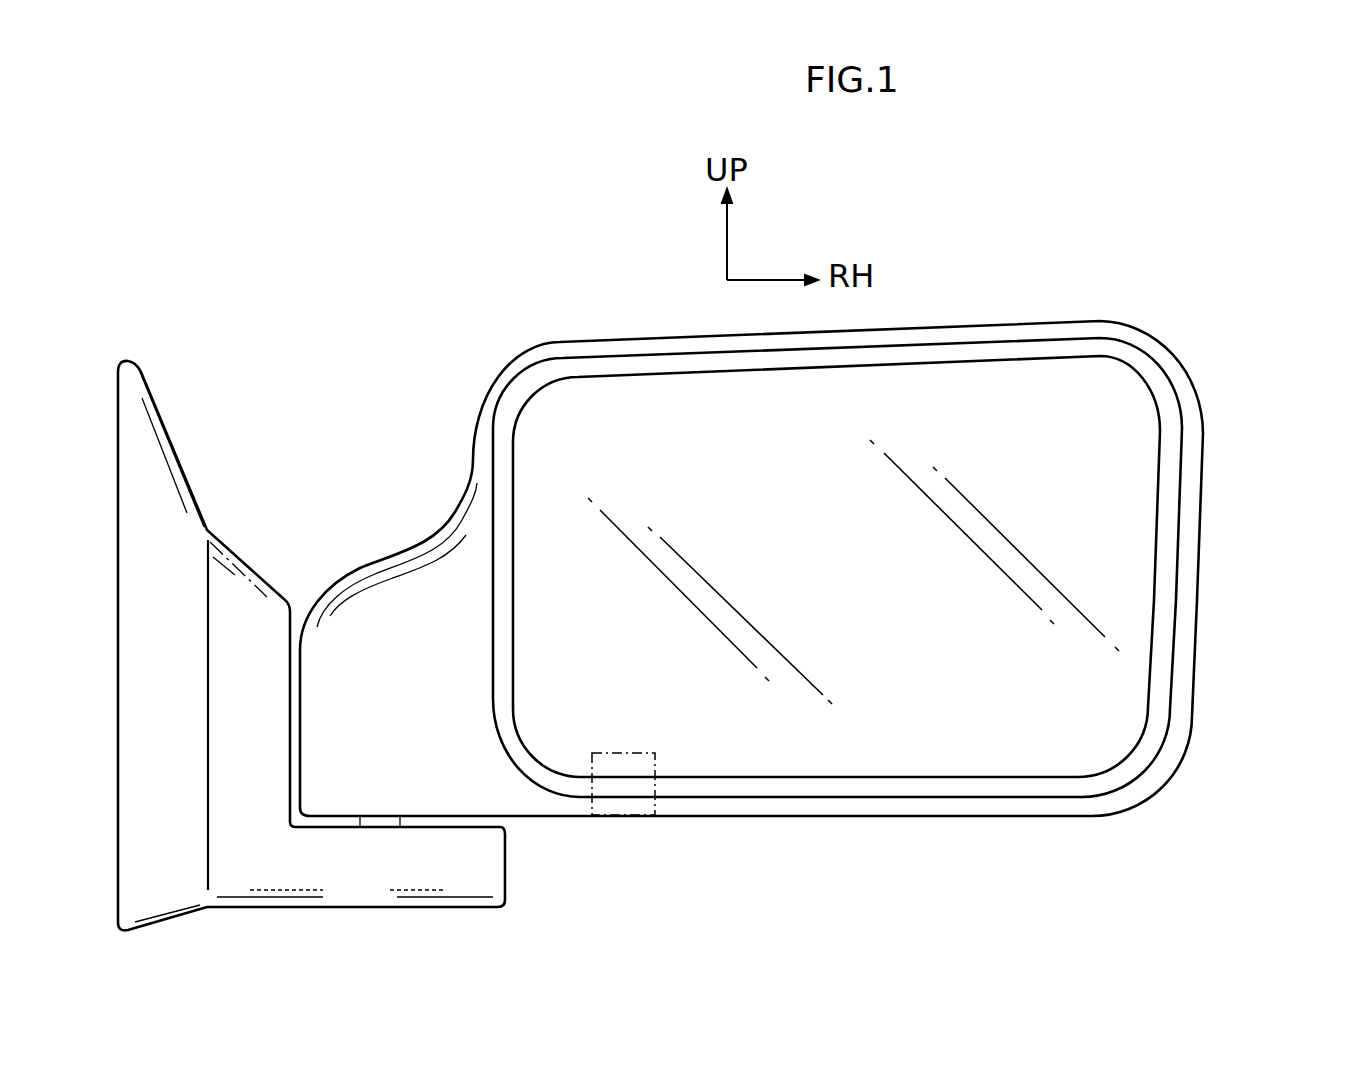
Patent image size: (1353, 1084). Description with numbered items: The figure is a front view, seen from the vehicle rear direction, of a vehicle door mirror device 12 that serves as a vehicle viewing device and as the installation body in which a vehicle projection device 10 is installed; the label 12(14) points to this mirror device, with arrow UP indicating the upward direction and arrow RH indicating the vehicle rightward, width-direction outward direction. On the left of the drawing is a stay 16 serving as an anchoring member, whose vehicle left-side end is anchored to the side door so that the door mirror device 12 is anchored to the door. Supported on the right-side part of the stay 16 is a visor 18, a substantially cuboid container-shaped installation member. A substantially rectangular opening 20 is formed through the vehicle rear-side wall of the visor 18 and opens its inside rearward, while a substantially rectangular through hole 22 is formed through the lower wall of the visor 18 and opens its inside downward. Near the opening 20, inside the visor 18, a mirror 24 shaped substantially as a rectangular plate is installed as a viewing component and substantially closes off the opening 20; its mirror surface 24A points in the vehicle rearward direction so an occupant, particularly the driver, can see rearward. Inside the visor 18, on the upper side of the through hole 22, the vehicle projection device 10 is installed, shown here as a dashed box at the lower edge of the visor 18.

The vehicle projection device 10 is at (638, 753).
The vehicle door mirror device 12 is at (342, 360).
The vehicle door 14 is at (704, 610).
The stay 16 is at (193, 488).
The visor 18 is at (1202, 568).
The opening 20 is at (1178, 476).
The through hole 22 is at (615, 818).
The mirror 24 is at (890, 621).
The mirror surface 24A is at (957, 738).